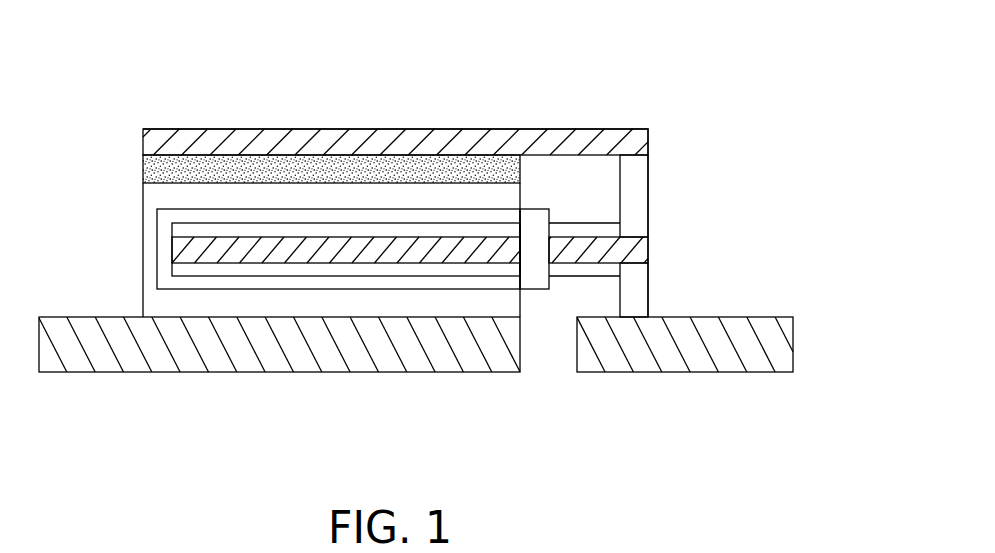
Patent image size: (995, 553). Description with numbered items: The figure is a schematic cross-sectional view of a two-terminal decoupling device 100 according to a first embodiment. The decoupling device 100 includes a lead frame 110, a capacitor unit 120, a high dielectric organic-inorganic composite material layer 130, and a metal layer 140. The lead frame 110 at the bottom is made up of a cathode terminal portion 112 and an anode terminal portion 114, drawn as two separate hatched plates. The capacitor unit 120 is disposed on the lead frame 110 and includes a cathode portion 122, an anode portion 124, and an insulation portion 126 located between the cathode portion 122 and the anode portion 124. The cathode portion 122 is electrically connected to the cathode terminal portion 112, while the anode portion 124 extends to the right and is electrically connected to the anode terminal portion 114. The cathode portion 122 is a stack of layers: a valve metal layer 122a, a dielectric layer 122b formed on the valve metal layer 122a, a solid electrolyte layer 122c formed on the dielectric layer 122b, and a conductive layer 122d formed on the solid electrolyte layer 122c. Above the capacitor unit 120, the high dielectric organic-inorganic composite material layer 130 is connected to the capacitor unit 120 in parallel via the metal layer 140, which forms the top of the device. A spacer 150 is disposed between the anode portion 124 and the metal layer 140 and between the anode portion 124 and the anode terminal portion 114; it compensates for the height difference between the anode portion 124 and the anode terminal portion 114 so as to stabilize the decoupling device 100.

The decoupling device 100 is at (738, 487).
The lead frame 110 is at (593, 440).
The cathode terminal portion 112 is at (465, 362).
The anode terminal portion 114 is at (615, 358).
The capacitor unit 120 is at (633, 57).
The cathode portion 122 is at (447, 178).
The valve metal layer 122a is at (178, 253).
The dielectric layer 122b is at (178, 232).
The solid electrolyte layer 122c is at (168, 216).
The conductive layer 122d is at (170, 197).
The anode portion 124 is at (584, 222).
The insulation portion 126 is at (535, 207).
The high dielectric organic-inorganic composite material layer 130 is at (353, 168).
The metal layer 140 is at (262, 144).
The spacer 150 is at (640, 197).